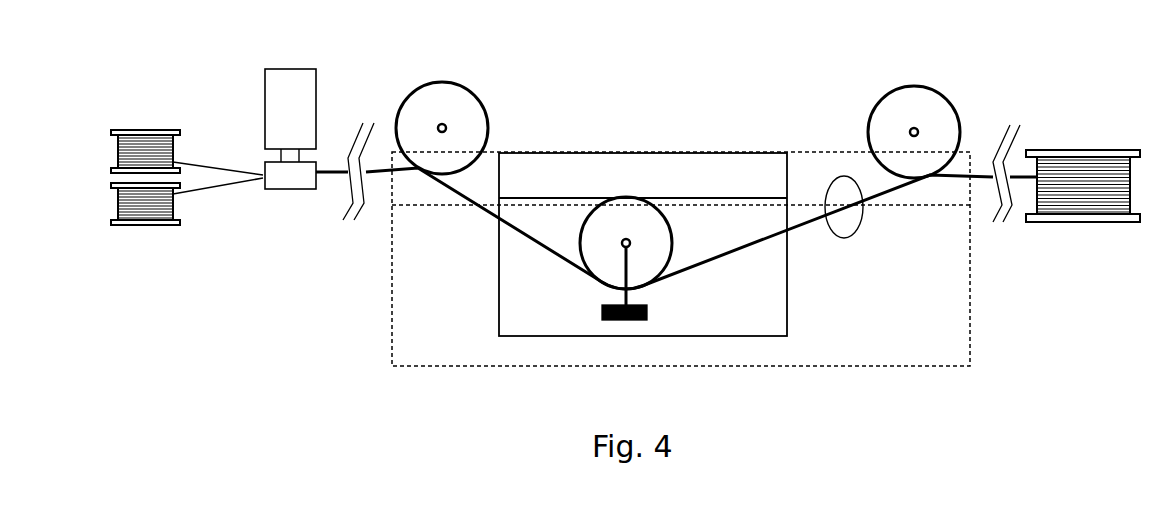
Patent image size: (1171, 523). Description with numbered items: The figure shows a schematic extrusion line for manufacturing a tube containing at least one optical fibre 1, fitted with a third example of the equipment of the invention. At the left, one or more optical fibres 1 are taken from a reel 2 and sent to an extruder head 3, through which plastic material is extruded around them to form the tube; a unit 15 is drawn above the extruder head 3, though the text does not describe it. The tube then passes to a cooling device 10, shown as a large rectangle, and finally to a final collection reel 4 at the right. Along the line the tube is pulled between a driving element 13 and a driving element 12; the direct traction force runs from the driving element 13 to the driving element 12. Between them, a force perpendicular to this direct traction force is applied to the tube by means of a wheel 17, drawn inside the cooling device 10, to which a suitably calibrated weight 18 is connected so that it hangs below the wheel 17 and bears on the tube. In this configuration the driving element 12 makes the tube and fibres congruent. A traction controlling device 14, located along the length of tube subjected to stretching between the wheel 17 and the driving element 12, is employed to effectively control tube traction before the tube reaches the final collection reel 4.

The optical fibre 1 is at (195, 160).
The reel 2 is at (122, 130).
The extruder head 3 is at (280, 178).
The final collection reel 4 is at (1070, 150).
The cooling device 10 is at (581, 162).
The driving element 12 is at (900, 97).
The driving element 13 is at (455, 107).
The traction controlling device 14 is at (848, 185).
The drive motor of stranding device 15 is at (298, 83).
The wheel 17 is at (638, 205).
The calibrated weight 18 is at (652, 308).